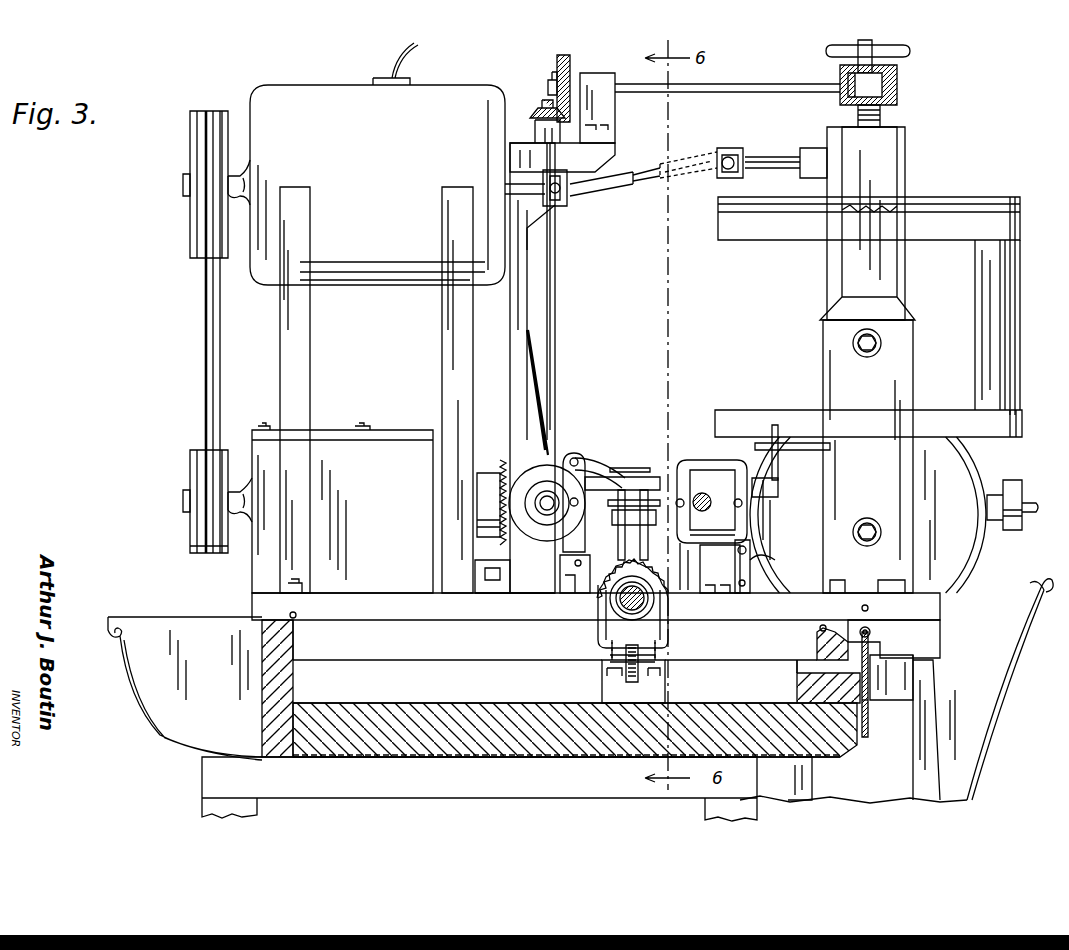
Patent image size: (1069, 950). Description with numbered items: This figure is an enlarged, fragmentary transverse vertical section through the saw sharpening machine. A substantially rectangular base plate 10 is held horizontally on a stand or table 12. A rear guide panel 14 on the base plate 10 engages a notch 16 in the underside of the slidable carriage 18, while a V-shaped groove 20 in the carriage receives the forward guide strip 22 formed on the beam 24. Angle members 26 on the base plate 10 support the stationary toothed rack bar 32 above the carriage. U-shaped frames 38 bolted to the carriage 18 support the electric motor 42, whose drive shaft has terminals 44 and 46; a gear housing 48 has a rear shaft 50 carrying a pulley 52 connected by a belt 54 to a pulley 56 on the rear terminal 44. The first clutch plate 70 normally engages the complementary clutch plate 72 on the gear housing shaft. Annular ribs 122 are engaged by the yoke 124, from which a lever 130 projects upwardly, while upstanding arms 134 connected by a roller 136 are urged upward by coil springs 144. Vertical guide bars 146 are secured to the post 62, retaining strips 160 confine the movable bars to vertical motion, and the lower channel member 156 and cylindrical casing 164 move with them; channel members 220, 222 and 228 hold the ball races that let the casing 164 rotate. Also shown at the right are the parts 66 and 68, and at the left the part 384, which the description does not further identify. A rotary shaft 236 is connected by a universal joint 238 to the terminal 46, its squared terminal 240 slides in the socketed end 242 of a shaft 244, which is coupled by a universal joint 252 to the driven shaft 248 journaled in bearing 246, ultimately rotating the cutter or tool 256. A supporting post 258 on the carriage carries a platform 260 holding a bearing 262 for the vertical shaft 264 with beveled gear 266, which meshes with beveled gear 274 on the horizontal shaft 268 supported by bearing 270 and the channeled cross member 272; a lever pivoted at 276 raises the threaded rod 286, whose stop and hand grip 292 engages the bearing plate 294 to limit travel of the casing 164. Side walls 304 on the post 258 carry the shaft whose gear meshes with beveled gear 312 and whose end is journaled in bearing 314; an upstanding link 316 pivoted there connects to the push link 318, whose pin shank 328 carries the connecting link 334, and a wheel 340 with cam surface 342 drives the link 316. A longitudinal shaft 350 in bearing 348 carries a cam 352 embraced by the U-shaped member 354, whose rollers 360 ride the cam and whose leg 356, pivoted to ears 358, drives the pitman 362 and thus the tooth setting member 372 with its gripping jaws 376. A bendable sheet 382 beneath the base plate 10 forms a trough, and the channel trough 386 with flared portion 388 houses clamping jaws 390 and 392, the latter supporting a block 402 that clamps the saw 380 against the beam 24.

The base plate 10 is at (478, 742).
The stand or table 12 is at (360, 790).
The rear guide panel 14 is at (290, 630).
The longitudinal recess or notch 16 is at (294, 644).
The carriage 18 is at (460, 645).
The V-shaped groove or recess 20 is at (822, 628).
The forward guide strip 22 is at (817, 647).
The longitudinal strip or beam 24 is at (800, 683).
The angle members 26 is at (605, 678).
The rack bar 32 is at (625, 620).
The U-shaped frames or straps 38 is at (302, 380).
The electric motor 42 is at (330, 92).
The rear drive shaft terminal 44 is at (186, 178).
The drive shaft terminal 46 is at (522, 182).
The gear housing 48 is at (335, 445).
The rear shaft 50 is at (186, 495).
The pulley 52 is at (190, 540).
The belt 54 is at (197, 372).
The pulley 56 is at (190, 232).
The post 62 is at (912, 383).
The knob 66 is at (1018, 484).
The knob shaft 68 is at (1033, 514).
The first clutch plate 70 is at (478, 478).
The clutch plate 72 is at (482, 520).
The annular ribs 122 is at (650, 620).
The yoke 124 is at (608, 625).
The lever or arm 130 is at (628, 476).
The upstanding arms 134 is at (600, 604).
The roller or bearing element 136 is at (525, 582).
The coil springs 144 is at (660, 597).
The vertical guide bars 146 is at (880, 280).
The lower channel shaped member 156 is at (868, 423).
The retaining strips 160 is at (900, 235).
The cylindrical casing or support 164 is at (985, 330).
The upper annular channel member 220 is at (1000, 197).
The annular channel member 222 is at (925, 212).
The annular channel member 228 is at (998, 240).
The rotary shaft 236 is at (605, 192).
The universal coupling or joint 238 is at (550, 232).
The squared terminal 240 is at (642, 185).
The square socketed end 242 is at (668, 168).
The shaft 244 is at (718, 158).
The bearing 246 is at (815, 150).
The driven shaft 248 is at (778, 158).
The universal joint 252 is at (720, 175).
The cutter blade or abrading wheel 256 is at (960, 572).
The supporting post 258 is at (555, 298).
The platform 260 is at (515, 155).
The bearing 262 is at (545, 143).
The vertical shaft 264 is at (548, 355).
The beveled gear 266 is at (535, 110).
The horizontal shaft 268 is at (735, 92).
The bearing 270 is at (612, 57).
The channeled cross member 272 is at (885, 108).
The beveled gear 274 is at (560, 60).
The pivot 276 is at (897, 90).
The externally threaded rod 286 is at (882, 120).
The stop and hand grip 292 is at (905, 50).
The bearing plate 294 is at (897, 70).
The side walls 304 is at (530, 400).
The beveled gear 312 is at (483, 548).
The bearing 314 is at (518, 575).
The upstanding link 316 is at (575, 530).
The push link 318 is at (575, 470).
The shank portion 328 is at (776, 436).
The connecting link 334 is at (800, 450).
The wheel 340 is at (535, 445).
The cam surface 342 is at (553, 460).
The bearing 348 is at (735, 552).
The longitudinal shaft 350 is at (712, 494).
The cam 352 is at (745, 512).
The U-shaped channel member 354 is at (700, 462).
The elongated leg portion 356 is at (752, 575).
The ears 358 is at (752, 536).
The rollers 360 is at (636, 475).
The pitman 362 is at (758, 570).
The saw tooth bending or setting member 372 is at (875, 624).
The gripping jaws 376 is at (872, 645).
The saw 380 is at (870, 735).
The bendable sheet 382 is at (563, 757).
The hull 384 is at (170, 702).
The channel shaped trough 386 is at (968, 792).
The outer forward portion 388 is at (990, 632).
The clamping jaw 390 is at (812, 782).
The clamping jaw 392 is at (925, 745).
The block 402 is at (890, 700).